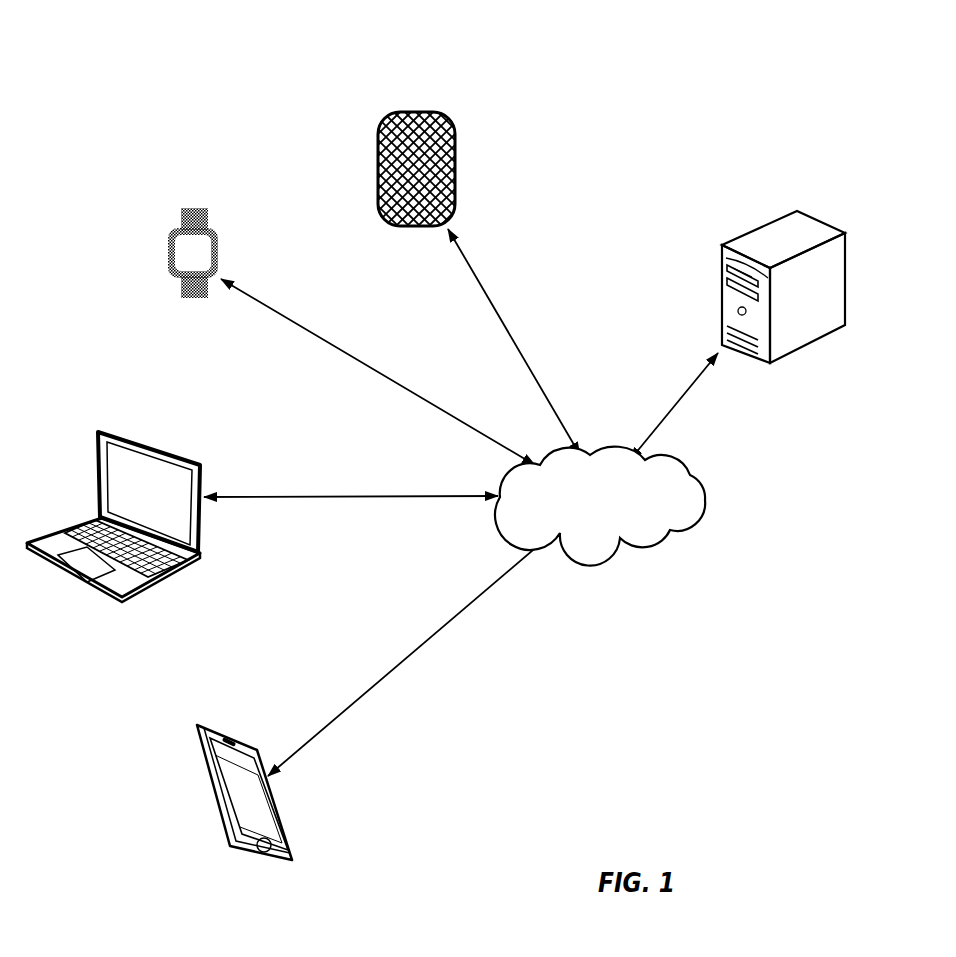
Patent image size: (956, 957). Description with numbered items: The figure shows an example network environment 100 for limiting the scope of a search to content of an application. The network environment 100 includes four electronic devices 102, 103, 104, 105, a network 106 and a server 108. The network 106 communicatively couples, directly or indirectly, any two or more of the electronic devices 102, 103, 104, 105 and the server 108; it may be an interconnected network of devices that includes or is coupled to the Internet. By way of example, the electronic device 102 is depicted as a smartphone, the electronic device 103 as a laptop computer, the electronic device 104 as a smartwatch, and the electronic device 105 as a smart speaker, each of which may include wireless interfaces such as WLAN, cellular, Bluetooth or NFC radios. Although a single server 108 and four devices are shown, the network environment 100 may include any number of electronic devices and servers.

The network environment 100 is at (193, 84).
The electronic device 102 is at (237, 856).
The electronic device 103 is at (115, 600).
The electronic device 104 is at (181, 298).
The electronic device 105 is at (384, 226).
The network 106 is at (632, 536).
The server 108 is at (734, 242).